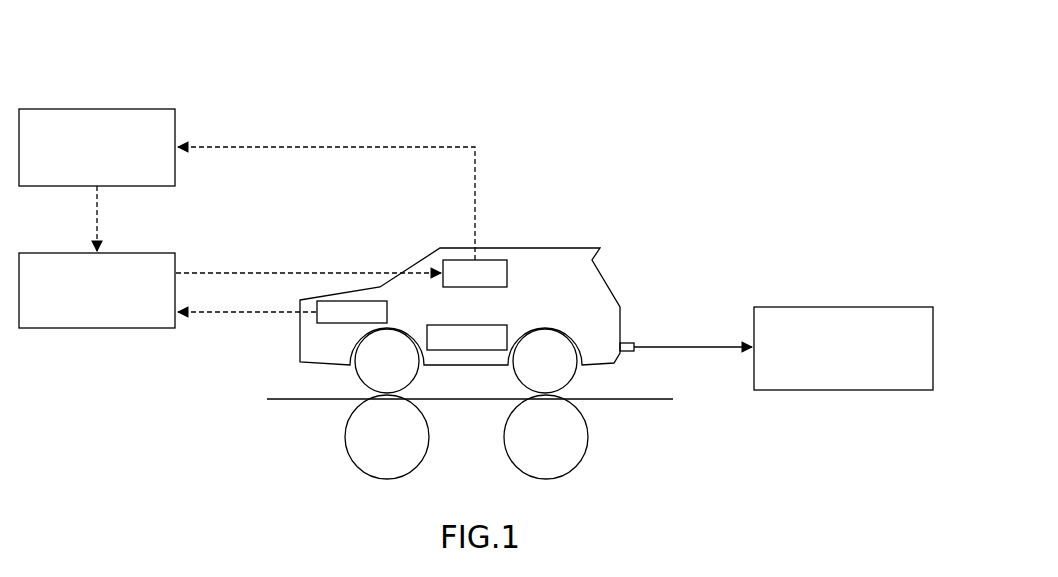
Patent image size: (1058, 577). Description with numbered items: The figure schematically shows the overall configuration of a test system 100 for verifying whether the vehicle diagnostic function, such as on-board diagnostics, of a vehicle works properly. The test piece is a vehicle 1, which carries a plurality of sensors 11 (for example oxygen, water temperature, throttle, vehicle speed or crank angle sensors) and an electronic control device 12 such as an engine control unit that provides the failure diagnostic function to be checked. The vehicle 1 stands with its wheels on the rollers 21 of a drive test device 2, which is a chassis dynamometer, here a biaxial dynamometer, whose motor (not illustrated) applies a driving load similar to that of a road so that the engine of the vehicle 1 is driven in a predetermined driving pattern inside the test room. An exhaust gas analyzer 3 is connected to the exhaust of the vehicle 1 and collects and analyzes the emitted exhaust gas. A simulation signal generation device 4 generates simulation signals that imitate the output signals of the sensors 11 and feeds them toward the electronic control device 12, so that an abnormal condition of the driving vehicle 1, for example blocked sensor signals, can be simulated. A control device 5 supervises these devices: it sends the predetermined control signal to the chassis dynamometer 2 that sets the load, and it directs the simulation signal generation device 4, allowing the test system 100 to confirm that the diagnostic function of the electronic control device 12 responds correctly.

The test system 100 is at (695, 97).
The vehicle 1 is at (567, 247).
The sensors 11 is at (389, 312).
The electronic control device 12 is at (509, 268).
The drive test device 2 is at (418, 437).
The rollers 21 is at (589, 438).
The exhaust gas analyzer 3 is at (910, 305).
The simulation signal generation device 4 is at (46, 252).
The control device 5 is at (46, 108).